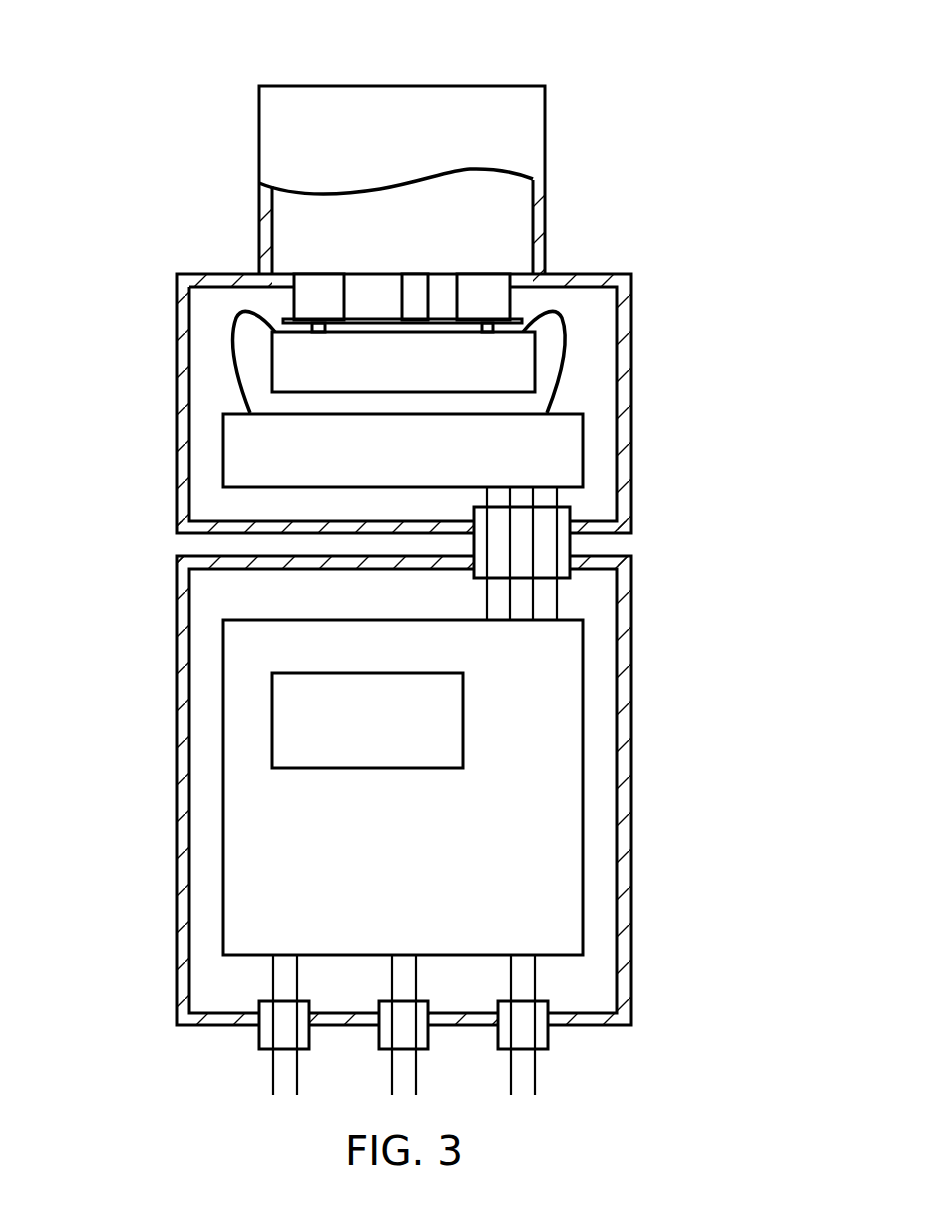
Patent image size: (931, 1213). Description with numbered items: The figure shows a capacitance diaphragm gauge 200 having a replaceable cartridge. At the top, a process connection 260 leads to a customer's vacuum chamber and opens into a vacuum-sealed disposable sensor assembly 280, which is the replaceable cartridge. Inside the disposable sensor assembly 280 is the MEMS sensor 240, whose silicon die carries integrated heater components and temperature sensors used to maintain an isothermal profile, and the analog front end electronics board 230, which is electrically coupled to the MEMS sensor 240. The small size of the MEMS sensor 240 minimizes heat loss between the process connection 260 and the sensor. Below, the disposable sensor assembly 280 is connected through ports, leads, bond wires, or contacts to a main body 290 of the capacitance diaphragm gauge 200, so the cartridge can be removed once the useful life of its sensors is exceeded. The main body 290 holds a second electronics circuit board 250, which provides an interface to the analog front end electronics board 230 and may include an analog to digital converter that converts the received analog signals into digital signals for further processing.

The capacitance diaphragm gauge 200 is at (152, 58).
The analog front end electronics board 230 is at (427, 466).
The MEMS sensor 240 is at (169, 276).
The second electronics circuit board 250 is at (427, 853).
The process connection 260 is at (545, 180).
The disposable sensor assembly 280 is at (631, 403).
The main body 290 is at (632, 788).